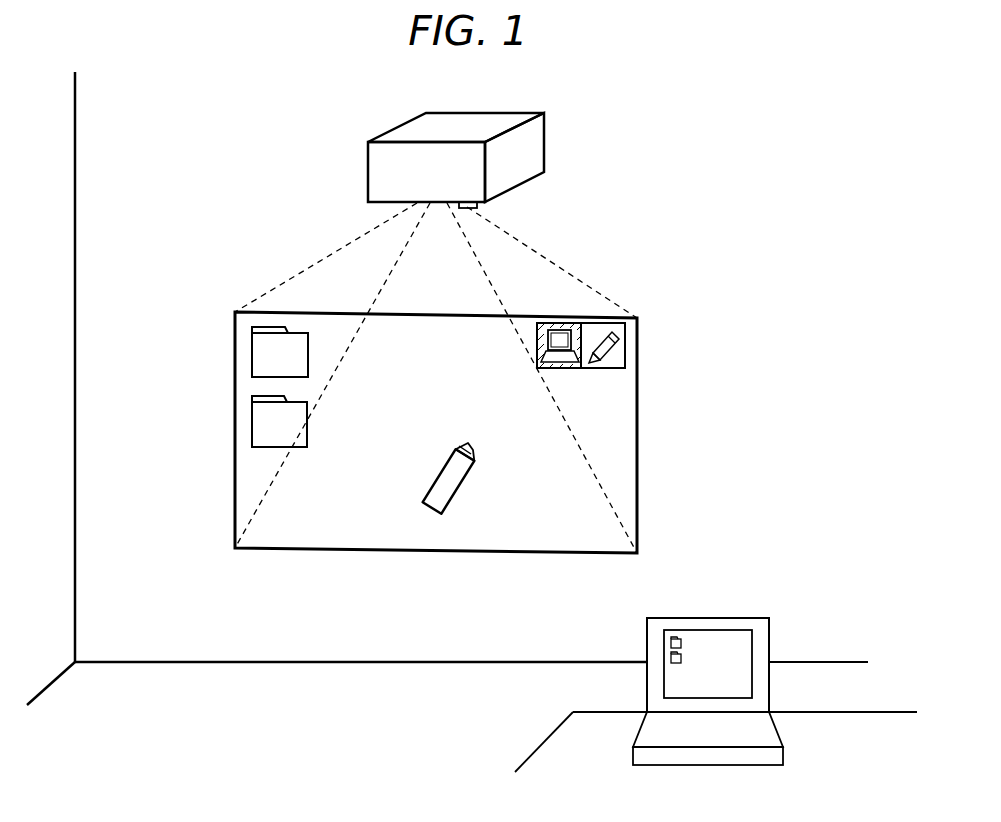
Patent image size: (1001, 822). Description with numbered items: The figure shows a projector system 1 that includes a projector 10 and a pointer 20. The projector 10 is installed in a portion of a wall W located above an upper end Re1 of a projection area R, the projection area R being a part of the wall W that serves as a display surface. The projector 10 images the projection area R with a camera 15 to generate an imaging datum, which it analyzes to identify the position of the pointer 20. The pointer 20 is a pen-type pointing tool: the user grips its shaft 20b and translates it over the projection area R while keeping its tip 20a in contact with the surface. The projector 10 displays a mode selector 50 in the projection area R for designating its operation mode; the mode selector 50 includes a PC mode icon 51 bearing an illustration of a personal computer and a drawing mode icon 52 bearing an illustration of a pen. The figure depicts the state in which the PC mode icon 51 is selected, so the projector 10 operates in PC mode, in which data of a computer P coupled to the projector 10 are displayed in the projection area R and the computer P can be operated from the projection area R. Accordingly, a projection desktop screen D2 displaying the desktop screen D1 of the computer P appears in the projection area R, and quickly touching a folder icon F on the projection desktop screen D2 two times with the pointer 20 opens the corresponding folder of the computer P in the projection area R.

The projector system 1 is at (713, 152).
The projector 10 is at (525, 157).
The camera 15 is at (477, 207).
The pointer 20 is at (440, 476).
The tip 20a is at (470, 450).
The shaft 20b is at (454, 490).
The mode selector 50 is at (619, 322).
The PC mode icon 51 is at (554, 323).
The drawing mode icon 52 is at (618, 333).
The wall W is at (98, 170).
The projection area R is at (244, 383).
The folder icon F is at (266, 425).
The upper end Re1 is at (440, 312).
The projection desktop screen D2 is at (620, 424).
The computer P is at (716, 664).
The desktop screen D1 is at (738, 645).